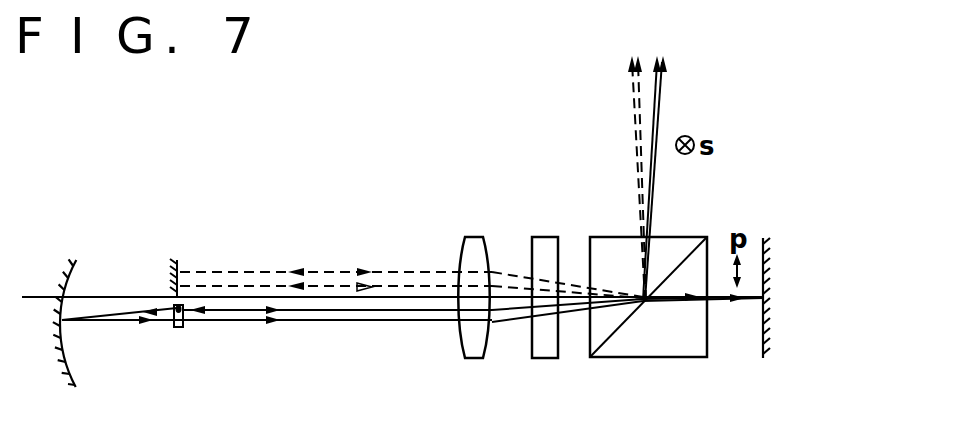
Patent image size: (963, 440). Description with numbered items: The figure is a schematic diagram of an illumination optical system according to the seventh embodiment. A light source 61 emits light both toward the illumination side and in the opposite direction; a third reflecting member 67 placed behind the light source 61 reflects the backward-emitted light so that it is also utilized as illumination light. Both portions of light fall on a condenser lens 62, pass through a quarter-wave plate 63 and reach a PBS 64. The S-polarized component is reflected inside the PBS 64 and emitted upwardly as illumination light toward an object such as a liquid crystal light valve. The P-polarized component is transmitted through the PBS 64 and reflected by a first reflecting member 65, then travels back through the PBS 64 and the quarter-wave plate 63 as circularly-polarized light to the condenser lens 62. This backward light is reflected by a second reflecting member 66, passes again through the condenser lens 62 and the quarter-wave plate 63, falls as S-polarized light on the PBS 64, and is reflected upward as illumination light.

The light source 61 is at (180, 328).
The condenser lens 62 is at (475, 358).
The quarter-wave plate 63 is at (548, 358).
The PBS 64 is at (647, 358).
The first reflecting member 65 is at (765, 343).
The second reflecting member 66 is at (178, 260).
The third reflecting member 67 is at (70, 353).